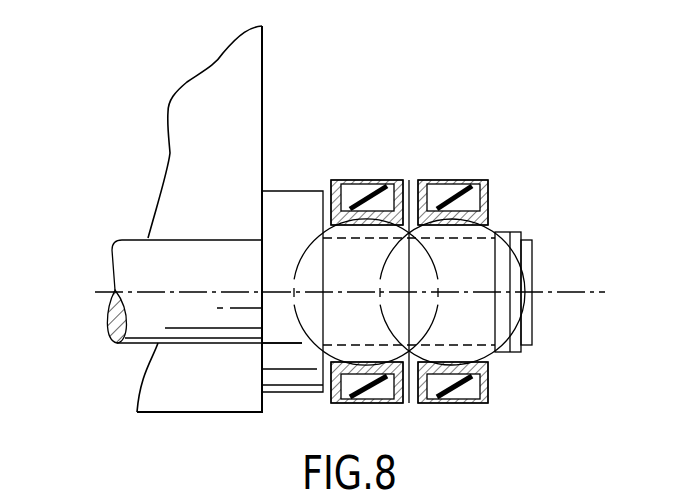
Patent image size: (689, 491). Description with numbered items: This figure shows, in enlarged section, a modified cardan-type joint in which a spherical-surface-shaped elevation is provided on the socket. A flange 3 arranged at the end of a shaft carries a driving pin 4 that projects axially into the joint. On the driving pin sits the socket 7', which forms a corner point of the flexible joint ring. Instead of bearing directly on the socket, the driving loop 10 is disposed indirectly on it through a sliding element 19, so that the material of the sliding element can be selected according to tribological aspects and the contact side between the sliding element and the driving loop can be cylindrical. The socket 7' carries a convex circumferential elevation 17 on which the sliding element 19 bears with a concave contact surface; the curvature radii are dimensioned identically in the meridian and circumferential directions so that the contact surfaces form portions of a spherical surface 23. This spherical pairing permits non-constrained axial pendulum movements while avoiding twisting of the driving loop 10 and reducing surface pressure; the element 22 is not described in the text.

The flange 3 is at (177, 145).
The driving pin 4 is at (129, 271).
The driving loop 10 is at (378, 180).
The sliding element 19 is at (488, 206).
The socket 7' is at (507, 291).
The convex circumferential elevation 17 is at (363, 281).
The spherical surface 23 is at (492, 350).
The element 22 is at (179, 487).